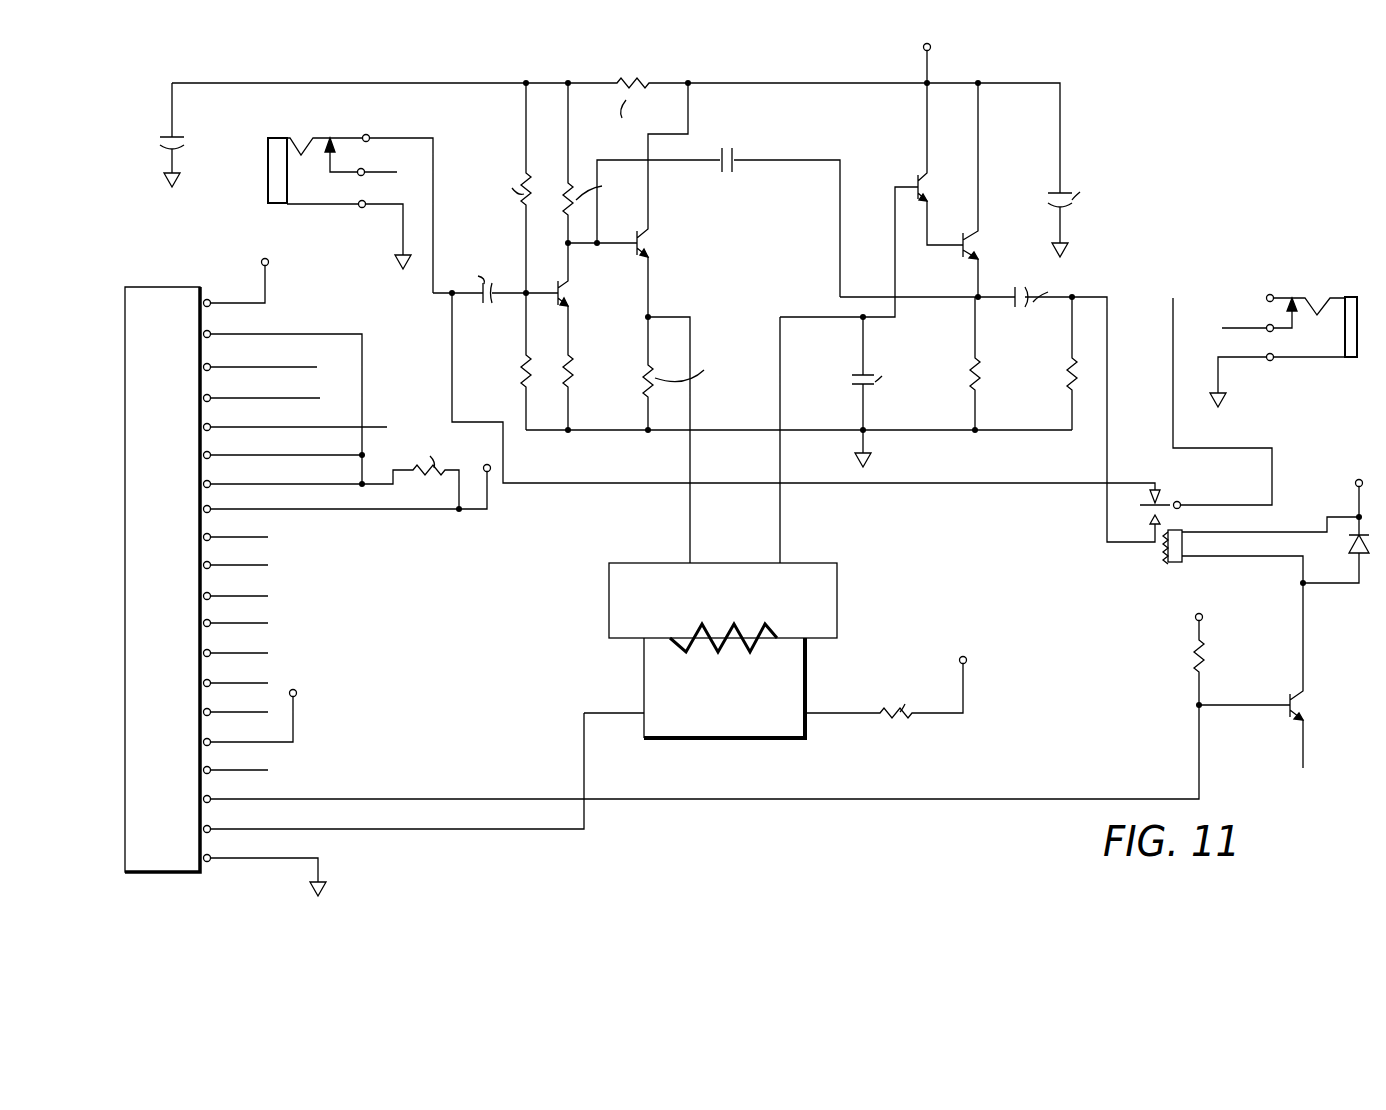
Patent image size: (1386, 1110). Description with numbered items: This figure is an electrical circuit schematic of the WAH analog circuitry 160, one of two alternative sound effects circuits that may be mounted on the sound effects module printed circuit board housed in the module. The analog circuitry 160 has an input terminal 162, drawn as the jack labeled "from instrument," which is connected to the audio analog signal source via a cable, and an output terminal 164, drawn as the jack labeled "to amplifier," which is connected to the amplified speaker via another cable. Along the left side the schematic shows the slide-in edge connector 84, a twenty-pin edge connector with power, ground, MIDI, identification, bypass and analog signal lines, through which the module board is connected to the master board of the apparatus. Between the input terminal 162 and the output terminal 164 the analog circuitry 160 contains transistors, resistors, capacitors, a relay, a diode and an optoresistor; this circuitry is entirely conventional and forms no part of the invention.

The slide-in edge connector 84 is at (135, 286).
The WAH analog circuitry 160 is at (990, 69).
The input terminal 162 is at (268, 194).
The output terminal 164 is at (1358, 305).